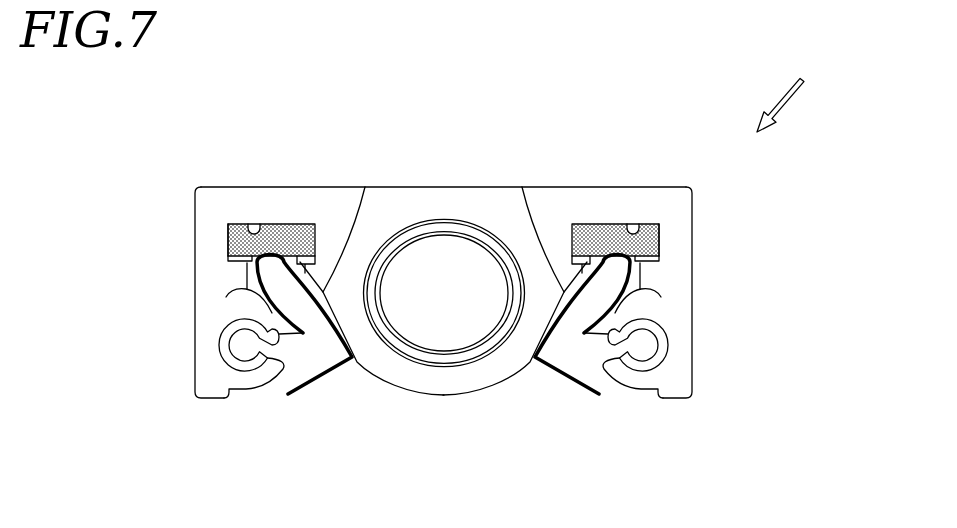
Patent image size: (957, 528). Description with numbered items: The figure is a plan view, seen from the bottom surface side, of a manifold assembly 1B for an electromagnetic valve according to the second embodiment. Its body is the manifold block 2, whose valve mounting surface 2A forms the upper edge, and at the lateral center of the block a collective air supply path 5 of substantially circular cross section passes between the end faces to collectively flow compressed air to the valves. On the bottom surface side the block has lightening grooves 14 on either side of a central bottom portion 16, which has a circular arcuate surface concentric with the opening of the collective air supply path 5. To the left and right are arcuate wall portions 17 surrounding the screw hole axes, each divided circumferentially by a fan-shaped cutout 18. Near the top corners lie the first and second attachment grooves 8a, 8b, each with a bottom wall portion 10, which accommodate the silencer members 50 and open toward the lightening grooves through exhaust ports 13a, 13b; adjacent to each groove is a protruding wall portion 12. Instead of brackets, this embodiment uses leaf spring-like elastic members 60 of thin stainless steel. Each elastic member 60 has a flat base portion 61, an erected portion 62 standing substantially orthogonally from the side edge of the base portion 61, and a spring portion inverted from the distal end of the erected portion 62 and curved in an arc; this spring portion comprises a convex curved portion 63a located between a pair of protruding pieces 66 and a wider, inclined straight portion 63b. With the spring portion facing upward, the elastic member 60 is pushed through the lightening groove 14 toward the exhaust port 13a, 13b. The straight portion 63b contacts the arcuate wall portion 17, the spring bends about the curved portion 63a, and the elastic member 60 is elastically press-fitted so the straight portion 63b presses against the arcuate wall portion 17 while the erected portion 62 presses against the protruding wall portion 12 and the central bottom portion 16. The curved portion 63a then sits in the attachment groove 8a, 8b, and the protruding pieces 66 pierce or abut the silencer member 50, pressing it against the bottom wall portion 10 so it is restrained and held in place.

The manifold assembly 1B is at (796, 87).
The manifold block 2 is at (455, 375).
The valve mounting surface 2A is at (430, 187).
The collective air supply path 5 is at (449, 307).
The first attachment groove 8a is at (220, 210).
The second attachment groove 8b is at (643, 187).
The bottom wall portion 10 is at (245, 224).
The protruding wall portion 12 is at (306, 258).
The exhaust port 13a is at (234, 268).
The exhaust port 13b is at (709, 284).
The lightening groove 14 is at (305, 370).
The central bottom portion 16 is at (418, 394).
The arcuate wall portion 17 is at (238, 412).
The fan-shaped cutout 18 is at (276, 338).
The silencer member 50 is at (228, 232).
The elastic member 60 is at (441, 435).
The base portion 61 is at (336, 372).
The erected portion 62 is at (322, 290).
The curved portion 63a is at (231, 257).
The straight portion 63b is at (226, 297).
The protruding piece 66 is at (286, 232).